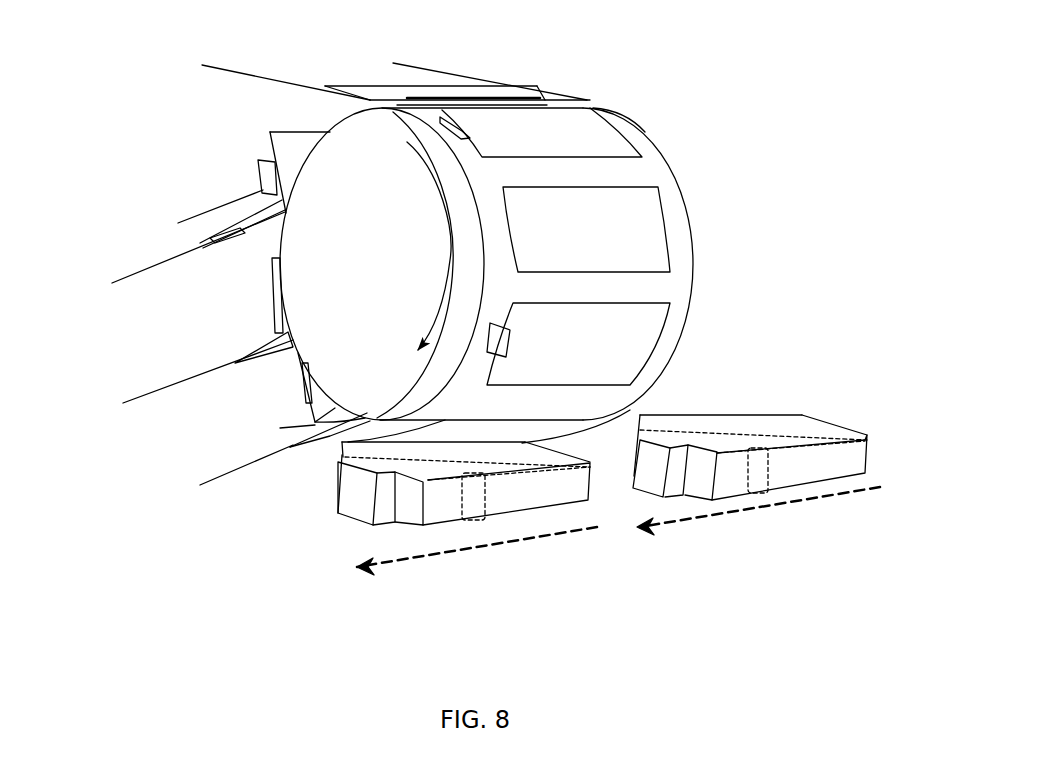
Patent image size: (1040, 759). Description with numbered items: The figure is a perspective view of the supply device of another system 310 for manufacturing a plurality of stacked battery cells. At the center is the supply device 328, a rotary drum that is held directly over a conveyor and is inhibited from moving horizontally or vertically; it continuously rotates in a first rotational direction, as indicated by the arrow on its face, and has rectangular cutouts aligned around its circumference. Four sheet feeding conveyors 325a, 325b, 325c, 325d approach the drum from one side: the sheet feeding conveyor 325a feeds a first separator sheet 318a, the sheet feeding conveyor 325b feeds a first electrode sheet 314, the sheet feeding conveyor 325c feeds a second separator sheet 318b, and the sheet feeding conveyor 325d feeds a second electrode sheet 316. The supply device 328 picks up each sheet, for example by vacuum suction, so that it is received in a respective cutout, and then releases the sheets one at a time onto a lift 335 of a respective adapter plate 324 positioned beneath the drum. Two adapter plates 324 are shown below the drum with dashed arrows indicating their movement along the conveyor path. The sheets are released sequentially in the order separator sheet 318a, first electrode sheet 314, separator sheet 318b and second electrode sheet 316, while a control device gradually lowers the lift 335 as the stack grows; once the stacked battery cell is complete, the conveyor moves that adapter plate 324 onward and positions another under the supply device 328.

The system 310 is at (740, 72).
The first electrode sheet 314 is at (285, 147).
The second electrode sheet 316 is at (325, 428).
The first separator sheet 318a is at (497, 97).
The second separator sheet 318b is at (285, 340).
The adapter plate 324 is at (597, 495).
The sheet feeding conveyor 325a is at (307, 62).
The sheet feeding conveyor 325b is at (152, 258).
The sheet feeding conveyor 325c is at (150, 387).
The sheet feeding conveyor 325d is at (198, 457).
The supply device 328 is at (712, 228).
The lift 335 is at (410, 462).